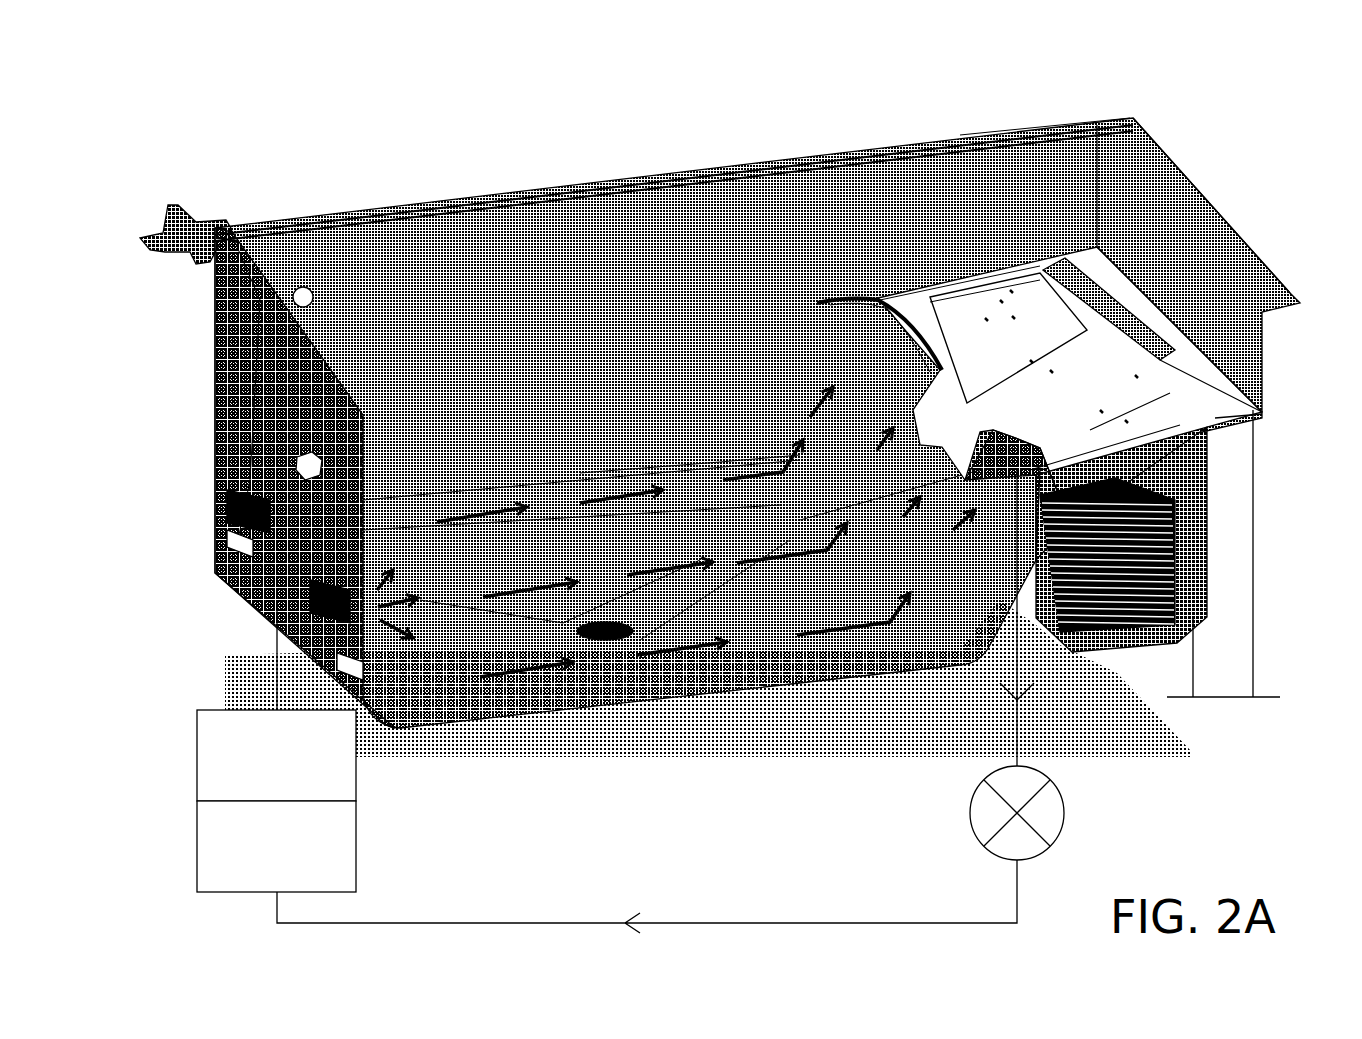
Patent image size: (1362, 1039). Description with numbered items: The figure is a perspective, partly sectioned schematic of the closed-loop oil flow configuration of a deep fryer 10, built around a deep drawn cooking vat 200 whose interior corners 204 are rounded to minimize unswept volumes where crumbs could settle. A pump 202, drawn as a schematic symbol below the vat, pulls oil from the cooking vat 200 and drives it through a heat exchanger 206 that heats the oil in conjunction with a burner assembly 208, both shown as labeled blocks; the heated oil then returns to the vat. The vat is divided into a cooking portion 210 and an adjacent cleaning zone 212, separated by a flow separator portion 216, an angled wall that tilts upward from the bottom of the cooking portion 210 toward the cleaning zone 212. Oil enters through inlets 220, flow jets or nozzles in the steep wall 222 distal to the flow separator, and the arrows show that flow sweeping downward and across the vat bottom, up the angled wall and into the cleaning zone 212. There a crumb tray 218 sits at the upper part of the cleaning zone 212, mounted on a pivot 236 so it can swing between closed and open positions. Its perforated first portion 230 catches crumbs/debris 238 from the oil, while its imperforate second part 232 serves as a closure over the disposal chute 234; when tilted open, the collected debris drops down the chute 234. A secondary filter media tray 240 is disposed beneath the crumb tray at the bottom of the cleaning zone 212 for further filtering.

The deep fryer 10 is at (530, 100).
The deep drawn cooking vat 200 is at (427, 233).
The pump 202 is at (1052, 812).
The interior corners 204 is at (420, 530).
The heat exchanger 206 is at (352, 763).
The burner assembly 208 is at (345, 843).
The cooking portion 210 is at (633, 350).
The cleaning zone 212 is at (990, 177).
The flow separator portion 216 is at (858, 297).
The crumb tray 218 is at (1083, 363).
The inlets 220 is at (303, 293).
The steep wall 222 is at (247, 430).
The first portion 230 is at (1120, 458).
The second part 232 is at (1220, 413).
The disposal chute 234 is at (1224, 675).
The pivot 236 is at (1167, 400).
The crumbs/debris 238 is at (1030, 257).
The secondary filter media tray 240 is at (1103, 560).